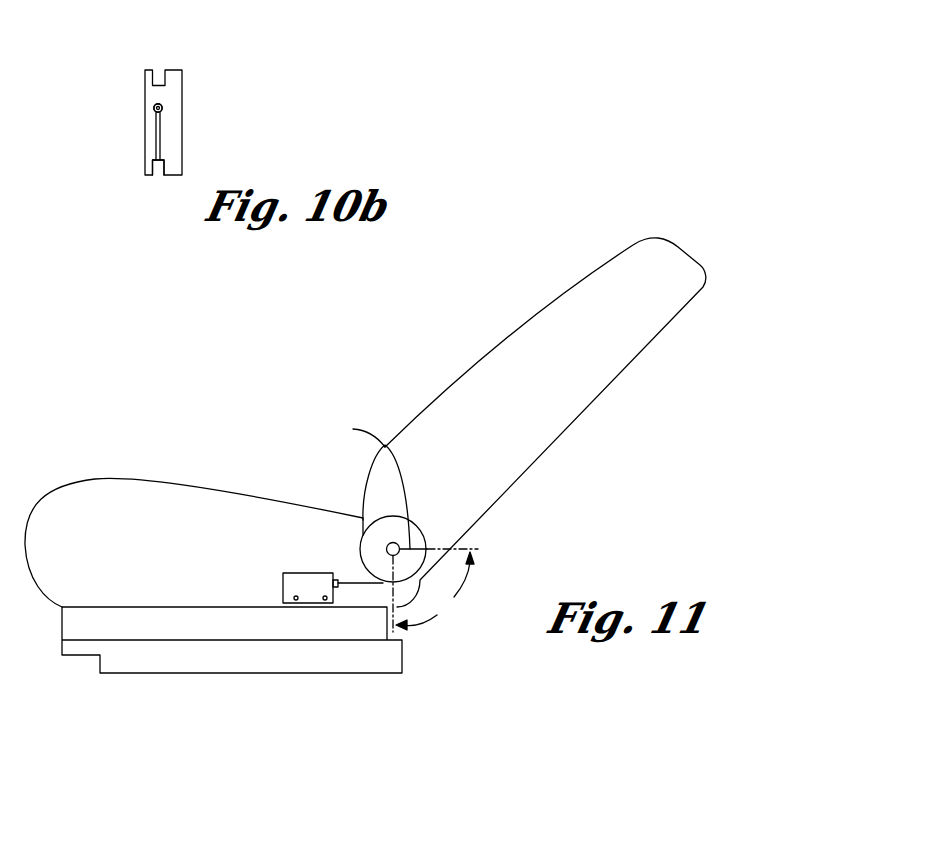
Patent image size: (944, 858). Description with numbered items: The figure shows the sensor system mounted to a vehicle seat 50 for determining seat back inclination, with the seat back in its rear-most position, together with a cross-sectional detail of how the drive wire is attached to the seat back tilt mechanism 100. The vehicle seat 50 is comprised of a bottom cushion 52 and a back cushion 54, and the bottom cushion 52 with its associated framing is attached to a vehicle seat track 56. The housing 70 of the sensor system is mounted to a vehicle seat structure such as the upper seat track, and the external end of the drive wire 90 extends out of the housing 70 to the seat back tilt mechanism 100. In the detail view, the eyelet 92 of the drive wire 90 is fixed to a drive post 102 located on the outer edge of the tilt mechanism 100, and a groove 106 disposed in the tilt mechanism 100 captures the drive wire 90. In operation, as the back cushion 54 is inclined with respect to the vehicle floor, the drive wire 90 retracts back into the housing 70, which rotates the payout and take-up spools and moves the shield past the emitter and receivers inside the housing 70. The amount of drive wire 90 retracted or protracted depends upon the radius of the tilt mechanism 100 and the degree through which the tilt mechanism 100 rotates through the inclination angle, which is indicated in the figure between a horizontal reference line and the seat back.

In FIG. 10B, the seat back tilt mechanism 100 is at (177, 88).
In FIG. 10B, the drive post 102 is at (154, 106).
In FIG. 10B, the eyelet 92 is at (161, 110).
In FIG. 10B, the drive wire 90 is at (156, 148).
In FIG. 11, the drive wire 90 is at (347, 584).
In FIG. 10B, the groove 106 is at (159, 182).
In FIG. 11, the vehicle seat 50 is at (301, 409).
In FIG. 11, the bottom cushion 52 is at (175, 512).
In FIG. 11, the back cushion 54 is at (483, 380).
In FIG. 11, the housing 70 is at (308, 572).
In FIG. 11, the vehicle seat track 56 is at (77, 676).